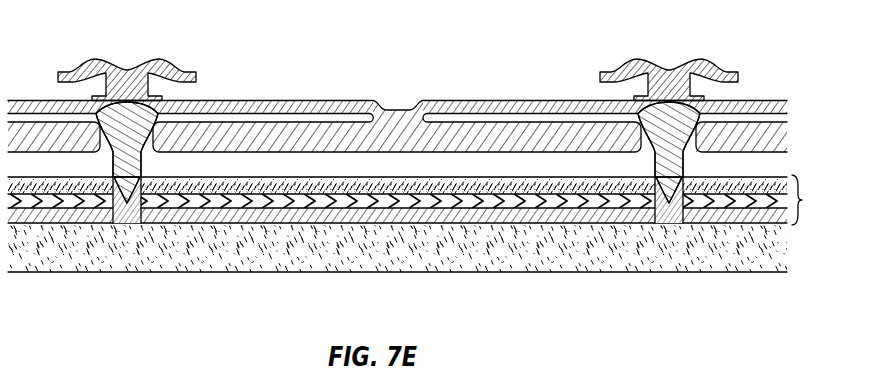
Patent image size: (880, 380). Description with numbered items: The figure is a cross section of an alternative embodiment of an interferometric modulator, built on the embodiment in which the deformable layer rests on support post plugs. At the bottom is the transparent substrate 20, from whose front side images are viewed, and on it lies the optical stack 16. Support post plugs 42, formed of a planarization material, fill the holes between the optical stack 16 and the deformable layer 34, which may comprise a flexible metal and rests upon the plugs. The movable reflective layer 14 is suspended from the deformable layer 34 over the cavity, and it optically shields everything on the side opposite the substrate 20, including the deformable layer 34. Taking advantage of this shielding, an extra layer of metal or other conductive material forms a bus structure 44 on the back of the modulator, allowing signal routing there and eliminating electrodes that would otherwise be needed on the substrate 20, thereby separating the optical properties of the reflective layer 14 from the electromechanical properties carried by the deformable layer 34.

The movable reflective layer 14 is at (338, 137).
The optical stack 16 is at (422, 200).
The substrate 20 is at (208, 258).
The deformable layer 34 is at (447, 105).
The support post plugs 42 is at (661, 144).
The bus structure 44 is at (102, 65).